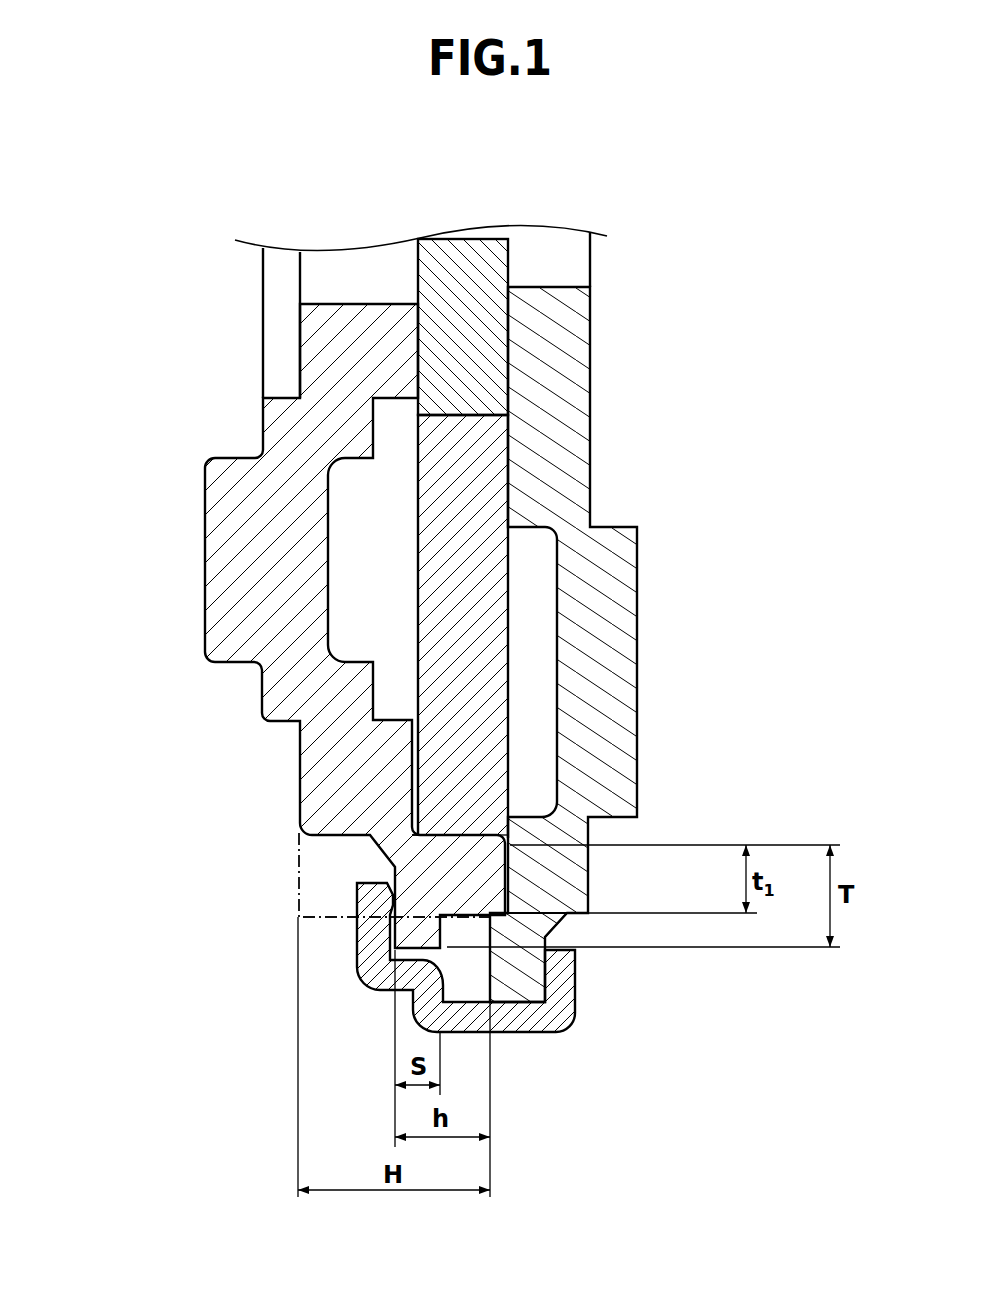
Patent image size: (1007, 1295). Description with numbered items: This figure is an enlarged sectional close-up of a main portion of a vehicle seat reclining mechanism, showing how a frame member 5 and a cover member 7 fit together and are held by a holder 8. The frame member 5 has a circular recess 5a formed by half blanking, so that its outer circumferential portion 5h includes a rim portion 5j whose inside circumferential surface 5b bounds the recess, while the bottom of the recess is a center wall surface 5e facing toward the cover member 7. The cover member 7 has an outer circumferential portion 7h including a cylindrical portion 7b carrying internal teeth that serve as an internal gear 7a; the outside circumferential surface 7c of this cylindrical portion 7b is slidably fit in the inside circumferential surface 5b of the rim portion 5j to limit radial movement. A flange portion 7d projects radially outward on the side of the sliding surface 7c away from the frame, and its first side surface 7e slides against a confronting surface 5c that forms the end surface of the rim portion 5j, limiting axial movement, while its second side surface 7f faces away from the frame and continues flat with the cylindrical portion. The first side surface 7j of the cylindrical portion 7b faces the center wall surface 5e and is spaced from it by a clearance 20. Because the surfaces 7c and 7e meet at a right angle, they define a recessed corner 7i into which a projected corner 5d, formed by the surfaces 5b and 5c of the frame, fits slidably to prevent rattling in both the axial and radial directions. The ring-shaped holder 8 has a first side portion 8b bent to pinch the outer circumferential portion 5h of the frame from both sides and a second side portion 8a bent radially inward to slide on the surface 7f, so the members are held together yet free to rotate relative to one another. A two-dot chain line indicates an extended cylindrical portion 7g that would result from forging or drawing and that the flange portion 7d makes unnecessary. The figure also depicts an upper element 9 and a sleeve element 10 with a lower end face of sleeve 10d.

The frame member 5 is at (567, 375).
The circular recess 5a is at (503, 478).
The inside circumferential surface 5b is at (512, 903).
The confronting surface 5c is at (507, 890).
The projected corner 5d is at (755, 755).
The center wall surface 5e is at (512, 907).
The outer circumferential portion 5h is at (539, 1041).
The rim portion 5j is at (508, 990).
The cover member 7 is at (335, 372).
The internal gear 7a is at (437, 835).
The cylindrical portion 7b is at (432, 929).
The outside circumferential surface 7c is at (473, 921).
The flange portion 7d is at (456, 937).
The first side surface 7e is at (458, 937).
The second side surface 7f is at (392, 908).
The extended cylindrical portion 7g is at (298, 873).
The outer circumferential portion 7h is at (135, 947).
The recessed corner 7i is at (700, 1010).
The first side surface 7j is at (508, 907).
The holder 8 is at (530, 1028).
The second side portion 8a is at (362, 934).
The first side portion 8b is at (556, 1033).
The upper element 9 is at (483, 280).
The sleeve element 10 is at (483, 570).
The lower end face of sleeve 10d is at (585, 679).
The clearance 20 is at (507, 848).